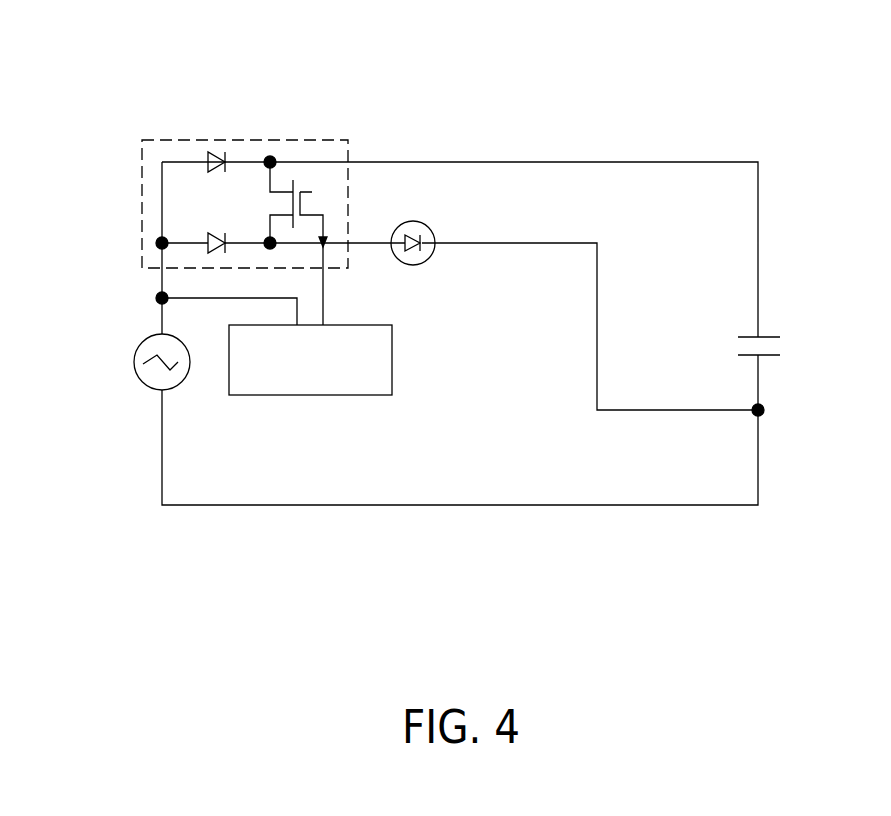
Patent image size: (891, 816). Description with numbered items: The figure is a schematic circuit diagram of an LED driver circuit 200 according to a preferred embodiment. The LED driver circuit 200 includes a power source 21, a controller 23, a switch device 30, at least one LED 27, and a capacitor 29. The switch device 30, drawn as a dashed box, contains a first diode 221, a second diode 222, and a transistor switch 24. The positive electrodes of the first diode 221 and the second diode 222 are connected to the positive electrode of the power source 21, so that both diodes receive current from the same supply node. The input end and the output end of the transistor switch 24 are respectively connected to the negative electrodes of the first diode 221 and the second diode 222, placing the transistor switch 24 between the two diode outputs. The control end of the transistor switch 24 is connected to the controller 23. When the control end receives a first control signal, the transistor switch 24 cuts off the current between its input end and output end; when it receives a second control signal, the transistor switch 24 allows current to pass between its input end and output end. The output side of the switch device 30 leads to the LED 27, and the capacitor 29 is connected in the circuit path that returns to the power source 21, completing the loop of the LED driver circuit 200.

The LED driver circuit 200 is at (790, 96).
The switch device 30 is at (275, 182).
The first diode 221 is at (227, 160).
The second diode 222 is at (228, 249).
The transistor switch 24 is at (312, 192).
The LED 27 is at (429, 229).
The capacitor 29 is at (765, 334).
The power source 21 is at (146, 339).
The controller 23 is at (392, 378).